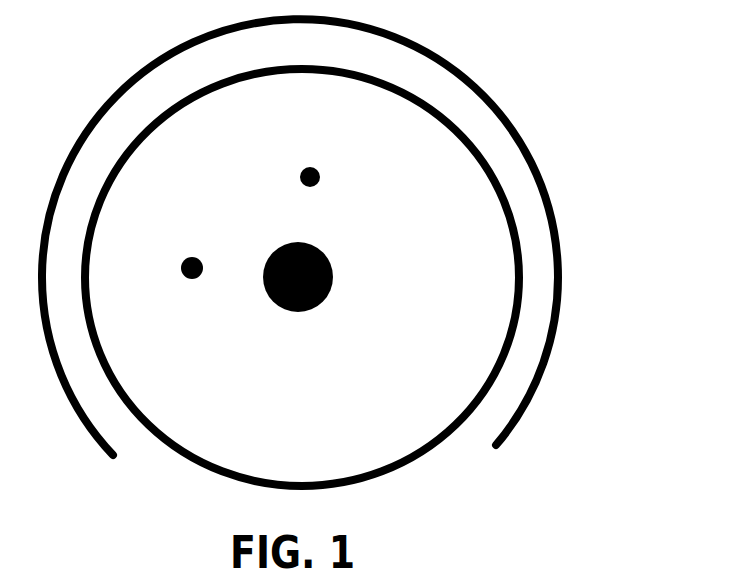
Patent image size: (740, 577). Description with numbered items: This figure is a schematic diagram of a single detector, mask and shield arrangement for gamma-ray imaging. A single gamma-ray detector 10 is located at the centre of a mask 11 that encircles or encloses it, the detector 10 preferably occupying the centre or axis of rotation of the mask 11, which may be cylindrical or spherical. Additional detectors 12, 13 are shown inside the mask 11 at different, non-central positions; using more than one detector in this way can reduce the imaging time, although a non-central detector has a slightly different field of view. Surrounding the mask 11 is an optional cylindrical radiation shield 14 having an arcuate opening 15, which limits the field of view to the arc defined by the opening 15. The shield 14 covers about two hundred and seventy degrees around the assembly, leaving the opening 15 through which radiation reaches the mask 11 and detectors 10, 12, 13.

The gamma-ray detector 10 is at (321, 244).
The mask 11 is at (498, 182).
The additional detector 12 is at (320, 172).
The additional detector 13 is at (187, 257).
The radiation shield 14 is at (553, 203).
The arcuate opening 15 is at (472, 462).